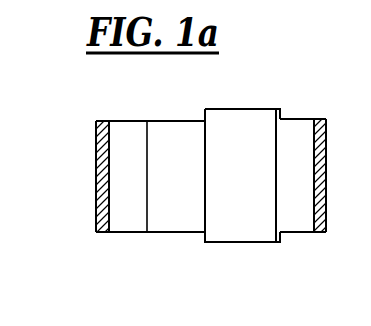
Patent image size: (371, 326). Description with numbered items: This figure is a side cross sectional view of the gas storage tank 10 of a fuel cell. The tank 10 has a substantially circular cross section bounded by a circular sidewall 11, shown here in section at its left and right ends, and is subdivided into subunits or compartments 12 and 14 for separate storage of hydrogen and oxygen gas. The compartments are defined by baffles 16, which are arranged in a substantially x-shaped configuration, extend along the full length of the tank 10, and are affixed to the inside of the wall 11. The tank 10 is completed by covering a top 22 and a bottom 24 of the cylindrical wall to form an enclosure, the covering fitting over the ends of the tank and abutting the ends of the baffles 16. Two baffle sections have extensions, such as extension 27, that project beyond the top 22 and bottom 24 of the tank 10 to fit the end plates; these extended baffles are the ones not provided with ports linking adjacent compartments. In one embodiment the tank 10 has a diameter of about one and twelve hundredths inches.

The gas storage tank 10 is at (193, 168).
The circular sidewall 11 is at (97, 170).
The subunit or compartment 12 is at (301, 130).
The subunit or compartment 14 is at (122, 185).
The baffle 16 is at (168, 208).
The top 22 is at (165, 121).
The bottom 24 is at (127, 225).
The baffle extension 27 is at (259, 109).